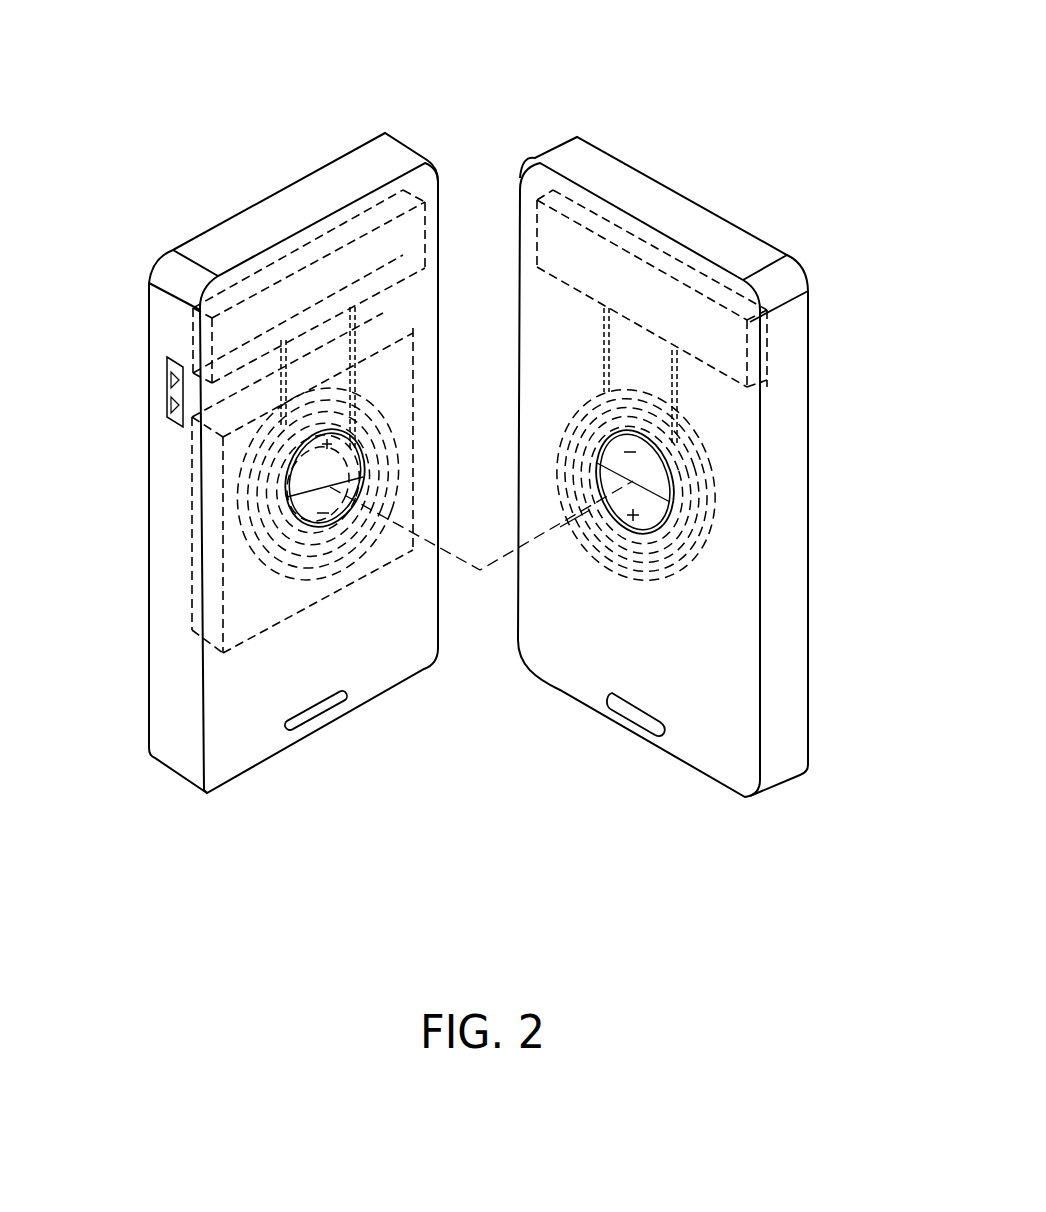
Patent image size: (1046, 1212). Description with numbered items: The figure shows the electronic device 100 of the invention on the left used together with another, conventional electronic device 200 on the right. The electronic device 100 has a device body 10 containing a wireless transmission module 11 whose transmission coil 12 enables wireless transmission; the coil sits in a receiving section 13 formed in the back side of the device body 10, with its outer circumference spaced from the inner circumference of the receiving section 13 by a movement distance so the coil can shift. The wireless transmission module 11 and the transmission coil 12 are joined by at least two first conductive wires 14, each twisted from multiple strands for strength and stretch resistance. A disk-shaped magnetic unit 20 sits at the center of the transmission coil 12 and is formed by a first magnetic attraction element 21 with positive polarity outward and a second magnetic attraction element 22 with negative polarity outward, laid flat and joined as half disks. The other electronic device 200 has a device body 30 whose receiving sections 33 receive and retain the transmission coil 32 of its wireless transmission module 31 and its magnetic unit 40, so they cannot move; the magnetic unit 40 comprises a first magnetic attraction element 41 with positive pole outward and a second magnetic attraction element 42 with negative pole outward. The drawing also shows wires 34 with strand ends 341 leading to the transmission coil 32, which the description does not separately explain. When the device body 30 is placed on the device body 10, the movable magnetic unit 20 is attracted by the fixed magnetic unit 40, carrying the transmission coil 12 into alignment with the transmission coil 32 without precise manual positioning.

The electronic device 100 is at (392, 118).
The device body 10 is at (165, 752).
The wireless transmission module 11 is at (291, 253).
The transmission coil 12 is at (240, 517).
The receiving section 13 is at (190, 573).
The first conductive wires 14 is at (190, 442).
The magnetic unit 20 is at (420, 798).
The first magnetic attraction element 21 is at (362, 520).
The second magnetic attraction element 22 is at (348, 560).
The electronic device 200 is at (590, 118).
The device body 30 is at (808, 658).
The wireless transmission module 31 is at (590, 223).
The transmission coil 32 is at (568, 402).
The receiving section 33 is at (610, 508).
The second connecting wires 34 is at (600, 333).
The wire ends 341 is at (673, 380).
The magnetic unit 40 is at (885, 515).
The first magnetic attraction element 41 is at (660, 520).
The second magnetic attraction element 42 is at (672, 493).